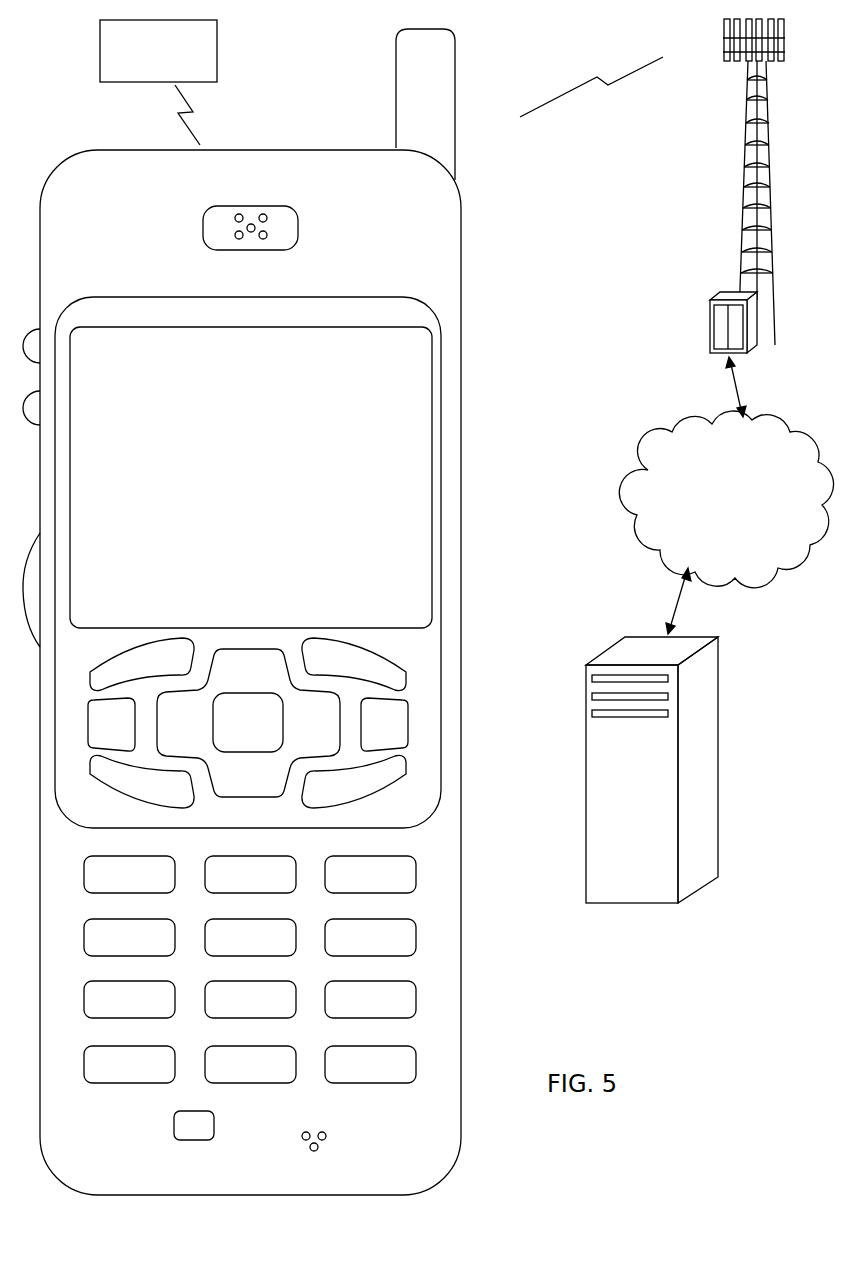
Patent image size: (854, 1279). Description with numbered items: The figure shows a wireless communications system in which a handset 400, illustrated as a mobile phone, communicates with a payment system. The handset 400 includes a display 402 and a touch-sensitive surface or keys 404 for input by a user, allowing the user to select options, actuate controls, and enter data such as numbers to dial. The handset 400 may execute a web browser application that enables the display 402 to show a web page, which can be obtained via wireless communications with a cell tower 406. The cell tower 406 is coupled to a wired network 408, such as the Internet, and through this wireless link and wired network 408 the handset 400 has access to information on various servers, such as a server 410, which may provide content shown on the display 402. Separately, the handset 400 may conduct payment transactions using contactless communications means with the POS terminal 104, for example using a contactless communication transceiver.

The POS terminal 104 is at (217, 53).
The handset 400 is at (96, 1193).
The display 402 is at (432, 338).
The keys 404 is at (472, 1108).
The cell tower 406 is at (740, 201).
The wired network 408 is at (655, 548).
The server 410 is at (634, 903).